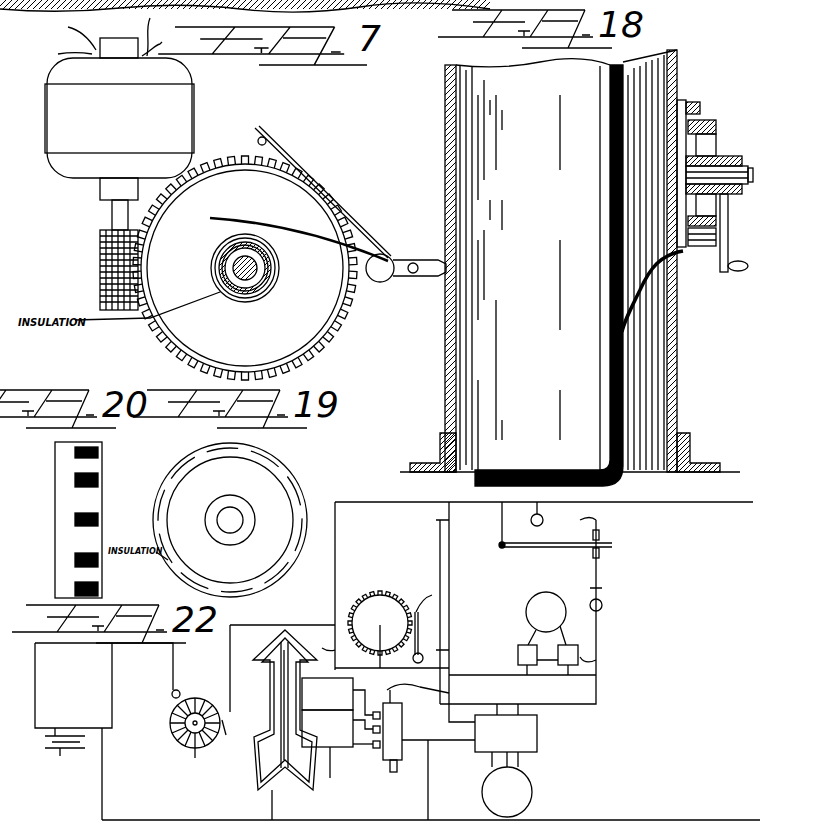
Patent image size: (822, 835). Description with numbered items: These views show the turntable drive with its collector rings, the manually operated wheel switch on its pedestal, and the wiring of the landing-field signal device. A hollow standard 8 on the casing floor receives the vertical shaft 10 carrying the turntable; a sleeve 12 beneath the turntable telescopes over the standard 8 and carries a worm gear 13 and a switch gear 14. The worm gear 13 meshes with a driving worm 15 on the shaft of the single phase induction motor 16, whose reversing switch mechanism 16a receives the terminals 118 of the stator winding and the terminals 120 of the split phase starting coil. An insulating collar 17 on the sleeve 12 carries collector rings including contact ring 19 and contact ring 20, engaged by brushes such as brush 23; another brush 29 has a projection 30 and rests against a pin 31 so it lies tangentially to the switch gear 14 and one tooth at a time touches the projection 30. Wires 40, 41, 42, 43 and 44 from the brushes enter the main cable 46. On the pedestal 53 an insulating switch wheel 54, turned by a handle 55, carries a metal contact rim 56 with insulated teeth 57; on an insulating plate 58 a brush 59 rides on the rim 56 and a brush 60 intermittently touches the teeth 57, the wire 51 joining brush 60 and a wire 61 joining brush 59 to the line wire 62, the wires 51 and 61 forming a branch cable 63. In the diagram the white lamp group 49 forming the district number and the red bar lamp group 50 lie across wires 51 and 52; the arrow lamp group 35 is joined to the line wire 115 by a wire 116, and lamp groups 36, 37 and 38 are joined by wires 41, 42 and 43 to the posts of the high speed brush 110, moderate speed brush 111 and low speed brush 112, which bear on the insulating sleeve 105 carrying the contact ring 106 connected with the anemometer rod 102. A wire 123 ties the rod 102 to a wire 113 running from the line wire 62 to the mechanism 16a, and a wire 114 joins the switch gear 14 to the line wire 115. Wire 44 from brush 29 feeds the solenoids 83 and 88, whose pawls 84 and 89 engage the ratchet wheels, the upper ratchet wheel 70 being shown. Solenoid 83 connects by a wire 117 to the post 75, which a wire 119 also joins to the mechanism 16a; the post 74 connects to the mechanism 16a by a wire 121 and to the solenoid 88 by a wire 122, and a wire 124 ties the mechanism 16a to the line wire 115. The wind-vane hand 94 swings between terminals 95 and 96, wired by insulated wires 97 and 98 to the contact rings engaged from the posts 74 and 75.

In FIG. 7, the hollow standard 8 is at (268, 276).
In FIG. 7, the vertical shaft 10 is at (258, 266).
In FIG. 7, the sleeve 12 is at (262, 290).
In FIG. 7, the worm gear 13 is at (175, 348).
In FIG. 7, the switch gear 14 is at (195, 308).
In FIG. 22, the switch gear 14 is at (392, 624).
In FIG. 7, the driving worm 15 is at (100, 285).
In FIG. 7, the single phase induction motor 16 is at (119, 134).
In FIG. 22, the single phase induction motor 16 is at (507, 792).
In FIG. 22, the reversing switch mechanism 16a is at (506, 741).
In FIG. 7, the insulating collar 17 is at (256, 293).
In FIG. 7, the contact ring 19 is at (224, 296).
In FIG. 7, the contact ring 20 is at (384, 282).
In FIG. 7, the brush 23 is at (279, 231).
In FIG. 7, the brush 29 is at (345, 225).
In FIG. 22, the brush 29 is at (416, 621).
In FIG. 7, the projection 30 is at (312, 180).
In FIG. 7, the pin 31 is at (258, 140).
In FIG. 22, the arrow lamp group 35 is at (275, 778).
In FIG. 22, the lamp group 36 is at (280, 638).
In FIG. 22, the lamp group 37 is at (281, 697).
In FIG. 22, the lamp group 38 is at (281, 752).
In FIG. 22, the wire 40 is at (322, 639).
In FIG. 22, the wire 41 is at (340, 704).
In FIG. 22, the wire 42 is at (327, 728).
In FIG. 22, the wire 43 is at (334, 769).
In FIG. 22, the wire 44 is at (505, 670).
In FIG. 18, the main cable 46 is at (572, 470).
In FIG. 22, the lamp group 49 is at (96, 675).
In FIG. 22, the lamp group 50 is at (58, 748).
In FIG. 22, the wire 51 is at (173, 660).
In FIG. 22, the wire 52 is at (102, 784).
In FIG. 18, the pedestal 53 is at (445, 350).
In FIG. 18, the insulating switch wheel 54 is at (716, 150).
In FIG. 20, the insulating switch wheel 54 is at (98, 500).
In FIG. 19, the insulating switch wheel 54 is at (230, 520).
In FIG. 22, the insulating switch wheel 54 is at (186, 746).
In FIG. 18, the crank or handle 55 is at (727, 272).
In FIG. 18, the metal contact rim 56 is at (698, 228).
In FIG. 20, the metal contact rim 56 is at (55, 506).
In FIG. 22, the metal contact rim 56 is at (195, 758).
In FIG. 18, the peripheral teeth 57 is at (704, 122).
In FIG. 20, the peripheral teeth 57 is at (98, 468).
In FIG. 22, the peripheral teeth 57 is at (172, 728).
In FIG. 18, the insulating plate 58 is at (682, 100).
In FIG. 18, the brush 59 is at (700, 108).
In FIG. 22, the brush 59 is at (236, 736).
In FIG. 18, the brush 60 is at (716, 236).
In FIG. 22, the brush 60 is at (178, 692).
In FIG. 22, the wire 61 is at (280, 625).
In FIG. 22, the line wire 62 is at (380, 508).
In FIG. 18, the branch cable 63 is at (650, 300).
In FIG. 22, the upper ratchet-wheel 70 is at (546, 618).
In FIG. 22, the post 74 is at (542, 525).
In FIG. 22, the post 75 is at (602, 606).
In FIG. 22, the solenoid 83 is at (571, 668).
In FIG. 22, the pawl 84 is at (562, 605).
In FIG. 22, the solenoid 88 is at (528, 671).
In FIG. 22, the pawl 89 is at (530, 608).
In FIG. 22, the arm or hand 94 is at (542, 548).
In FIG. 22, the contact terminal 95 is at (600, 535).
In FIG. 22, the contact terminal 96 is at (600, 553).
In FIG. 22, the insulated wire 97 is at (596, 520).
In FIG. 22, the insulated wire 98 is at (602, 590).
In FIG. 22, the anemometer rod 102 is at (394, 772).
In FIG. 22, the insulating sleeve 105 is at (382, 760).
In FIG. 22, the contact ring 106 is at (392, 740).
In FIG. 22, the high speed brush 110 is at (367, 704).
In FIG. 22, the moderate speed brush 111 is at (367, 723).
In FIG. 22, the low speed brush 112 is at (372, 748).
In FIG. 7, the wire 113 is at (62, 30).
In FIG. 22, the wire 113 is at (452, 572).
In FIG. 22, the wire 114 is at (362, 648).
In FIG. 22, the line wire 115 is at (592, 820).
In FIG. 22, the wire 116 is at (272, 805).
In FIG. 22, the wire 117 is at (596, 660).
In FIG. 22, the stator winding terminals 118 is at (493, 767).
In FIG. 7, the wire 119 is at (174, 40).
In FIG. 22, the wire 119 is at (596, 686).
In FIG. 22, the split phase starting coil terminals 120 is at (510, 750).
In FIG. 7, the wire 121 is at (148, 36).
In FIG. 22, the wire 121 is at (438, 548).
In FIG. 22, the wire 122 is at (462, 660).
In FIG. 22, the wire 123 is at (405, 691).
In FIG. 7, the wire 124 is at (52, 53).
In FIG. 22, the wire 124 is at (450, 740).